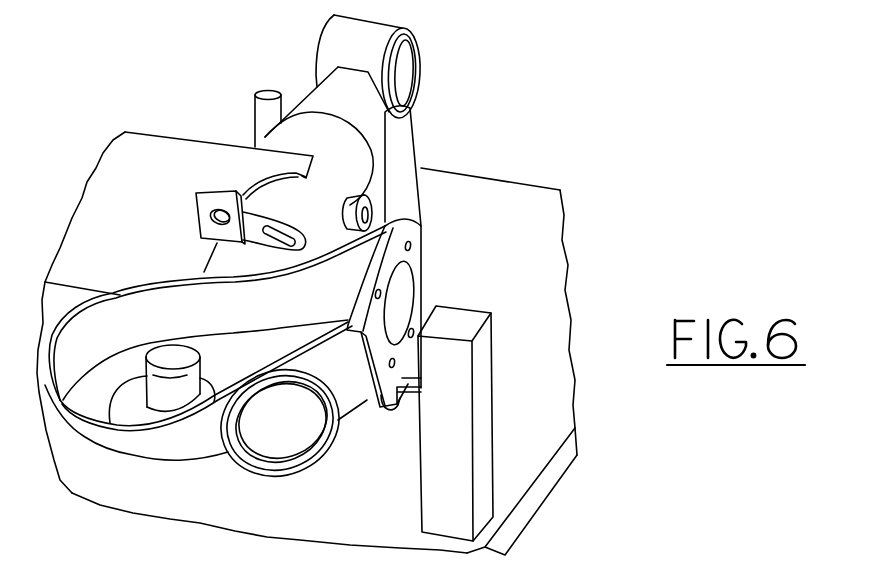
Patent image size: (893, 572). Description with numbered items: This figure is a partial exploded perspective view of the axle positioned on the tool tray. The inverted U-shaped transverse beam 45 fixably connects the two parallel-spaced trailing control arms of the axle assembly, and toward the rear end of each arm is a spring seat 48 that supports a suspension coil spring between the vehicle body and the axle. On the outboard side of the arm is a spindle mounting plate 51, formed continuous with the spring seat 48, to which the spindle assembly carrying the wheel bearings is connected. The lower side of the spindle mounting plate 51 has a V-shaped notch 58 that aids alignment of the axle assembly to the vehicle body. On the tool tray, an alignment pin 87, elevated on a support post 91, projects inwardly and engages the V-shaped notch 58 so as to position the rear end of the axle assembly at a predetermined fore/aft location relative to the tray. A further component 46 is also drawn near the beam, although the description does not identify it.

The inverted U-shaped transverse beam 45 is at (188, 148).
The tubular clamp body 46 is at (398, 28).
The spring seat 48 is at (117, 360).
The spindle mounting plate 51 is at (422, 232).
The V-shaped notch 58 is at (399, 400).
The alignment pin 87 is at (408, 398).
The support post 91 is at (485, 438).